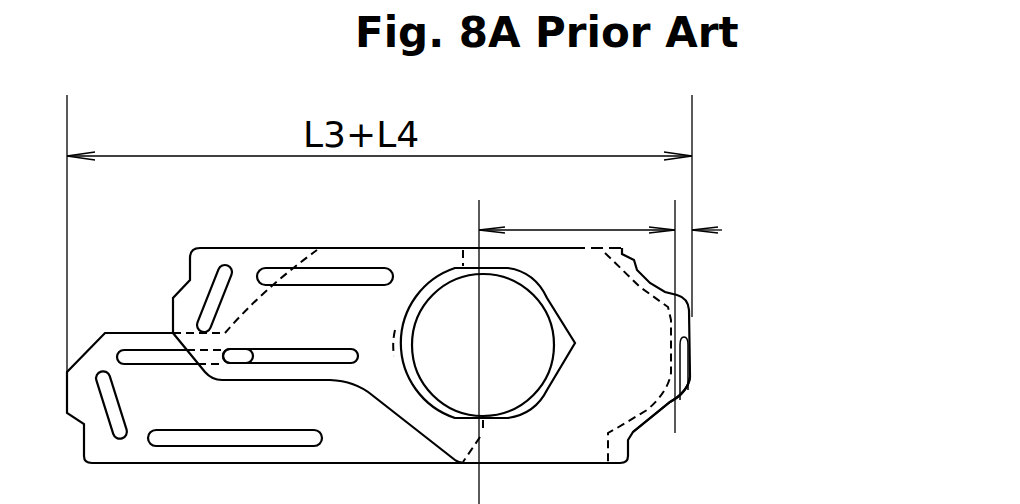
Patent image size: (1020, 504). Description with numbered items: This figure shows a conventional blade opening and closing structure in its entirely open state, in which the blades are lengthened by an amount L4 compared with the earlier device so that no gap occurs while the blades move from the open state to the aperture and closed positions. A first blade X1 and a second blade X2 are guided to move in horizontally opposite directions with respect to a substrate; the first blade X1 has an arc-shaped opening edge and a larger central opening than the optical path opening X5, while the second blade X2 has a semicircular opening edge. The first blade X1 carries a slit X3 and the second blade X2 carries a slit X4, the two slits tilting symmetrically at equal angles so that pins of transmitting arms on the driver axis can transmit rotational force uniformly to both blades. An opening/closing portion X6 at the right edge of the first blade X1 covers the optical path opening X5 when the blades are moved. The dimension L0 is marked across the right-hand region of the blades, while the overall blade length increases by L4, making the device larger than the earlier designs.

The first blade X1 is at (252, 263).
The second blade X2 is at (152, 447).
The slit X3 is at (206, 312).
The slit X4 is at (75, 423).
The optical path opening X5 is at (424, 312).
The opening/closing portion X6 is at (677, 395).
The length L0 is at (577, 346).
The length increase of the blades L4 is at (724, 210).